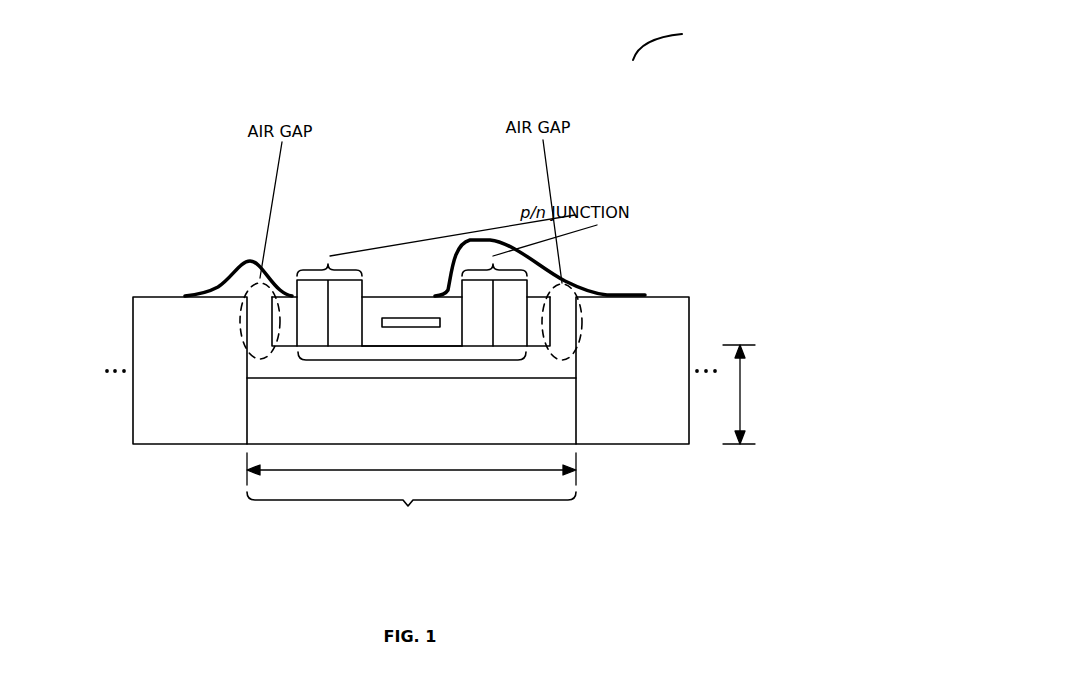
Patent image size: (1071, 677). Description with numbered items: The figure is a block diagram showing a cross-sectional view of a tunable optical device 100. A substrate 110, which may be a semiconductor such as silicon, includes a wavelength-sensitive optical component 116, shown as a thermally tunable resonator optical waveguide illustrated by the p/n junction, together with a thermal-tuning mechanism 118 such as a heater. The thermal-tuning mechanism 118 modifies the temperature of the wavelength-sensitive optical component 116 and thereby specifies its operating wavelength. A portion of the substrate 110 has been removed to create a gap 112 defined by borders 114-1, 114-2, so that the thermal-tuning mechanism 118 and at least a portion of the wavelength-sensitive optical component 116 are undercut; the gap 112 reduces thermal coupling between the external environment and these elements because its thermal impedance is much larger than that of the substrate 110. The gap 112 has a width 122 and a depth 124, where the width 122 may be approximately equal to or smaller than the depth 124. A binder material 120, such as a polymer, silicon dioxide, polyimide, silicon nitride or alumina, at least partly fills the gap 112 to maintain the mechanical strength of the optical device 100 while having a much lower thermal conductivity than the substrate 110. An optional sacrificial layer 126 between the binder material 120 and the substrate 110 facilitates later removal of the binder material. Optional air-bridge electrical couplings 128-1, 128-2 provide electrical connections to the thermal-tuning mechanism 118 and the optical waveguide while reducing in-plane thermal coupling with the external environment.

The tunable optical device 100 is at (522, 151).
The substrate 110 is at (422, 308).
The gap 112 is at (408, 505).
The border 114-1 is at (247, 393).
The border 114-2 is at (576, 393).
The wavelength-sensitive optical component 116 is at (407, 360).
The thermal-tuning mechanism 118 is at (403, 327).
The binder material 120 is at (411, 411).
The width 122 is at (437, 470).
The depth 124 is at (740, 410).
The sacrificial layer 126 is at (535, 362).
The air-bridge electrical coupling 128-1 is at (237, 265).
The air-bridge electrical coupling 128-2 is at (608, 293).